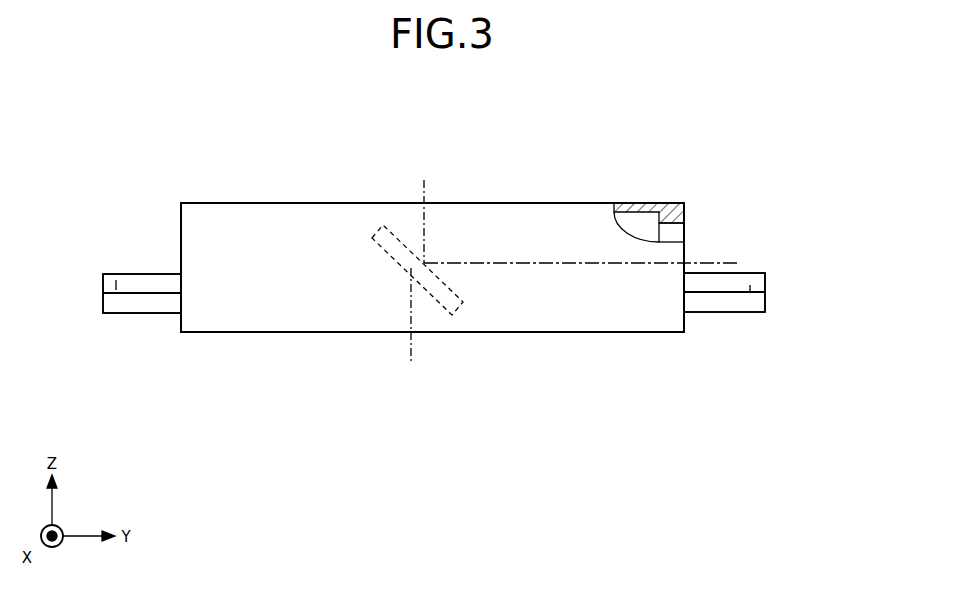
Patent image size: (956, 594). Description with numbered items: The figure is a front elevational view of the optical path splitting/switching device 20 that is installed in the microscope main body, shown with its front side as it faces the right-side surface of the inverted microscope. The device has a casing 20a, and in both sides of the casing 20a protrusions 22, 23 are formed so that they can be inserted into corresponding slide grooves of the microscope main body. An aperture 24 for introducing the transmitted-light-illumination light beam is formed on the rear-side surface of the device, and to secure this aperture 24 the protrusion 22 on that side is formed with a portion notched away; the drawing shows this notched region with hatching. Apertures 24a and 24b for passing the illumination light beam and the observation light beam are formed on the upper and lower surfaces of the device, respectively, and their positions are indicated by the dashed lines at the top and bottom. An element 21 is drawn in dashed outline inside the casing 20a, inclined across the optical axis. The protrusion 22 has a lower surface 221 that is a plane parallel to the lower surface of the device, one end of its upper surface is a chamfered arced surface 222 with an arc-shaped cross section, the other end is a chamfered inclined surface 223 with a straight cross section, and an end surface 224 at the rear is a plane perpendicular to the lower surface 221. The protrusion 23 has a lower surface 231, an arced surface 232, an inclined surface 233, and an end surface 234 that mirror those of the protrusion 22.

The optical path splitting/switching device 20 is at (404, 101).
The casing 20a is at (520, 202).
The magnet 21 is at (383, 225).
The protrusion 22 is at (728, 313).
The lower surface 221 is at (692, 313).
The arced surface 222 is at (757, 272).
The inclined surface 223 is at (750, 288).
The end surface 224 is at (766, 280).
The protrusion 23 is at (129, 313).
The lower surface 231 is at (167, 313).
The arced surface 232 is at (130, 272).
The inclined surface 233 is at (117, 283).
The end surface 234 is at (103, 281).
The aperture 24 is at (672, 230).
The aperture 24a is at (428, 192).
The aperture 24b is at (407, 343).